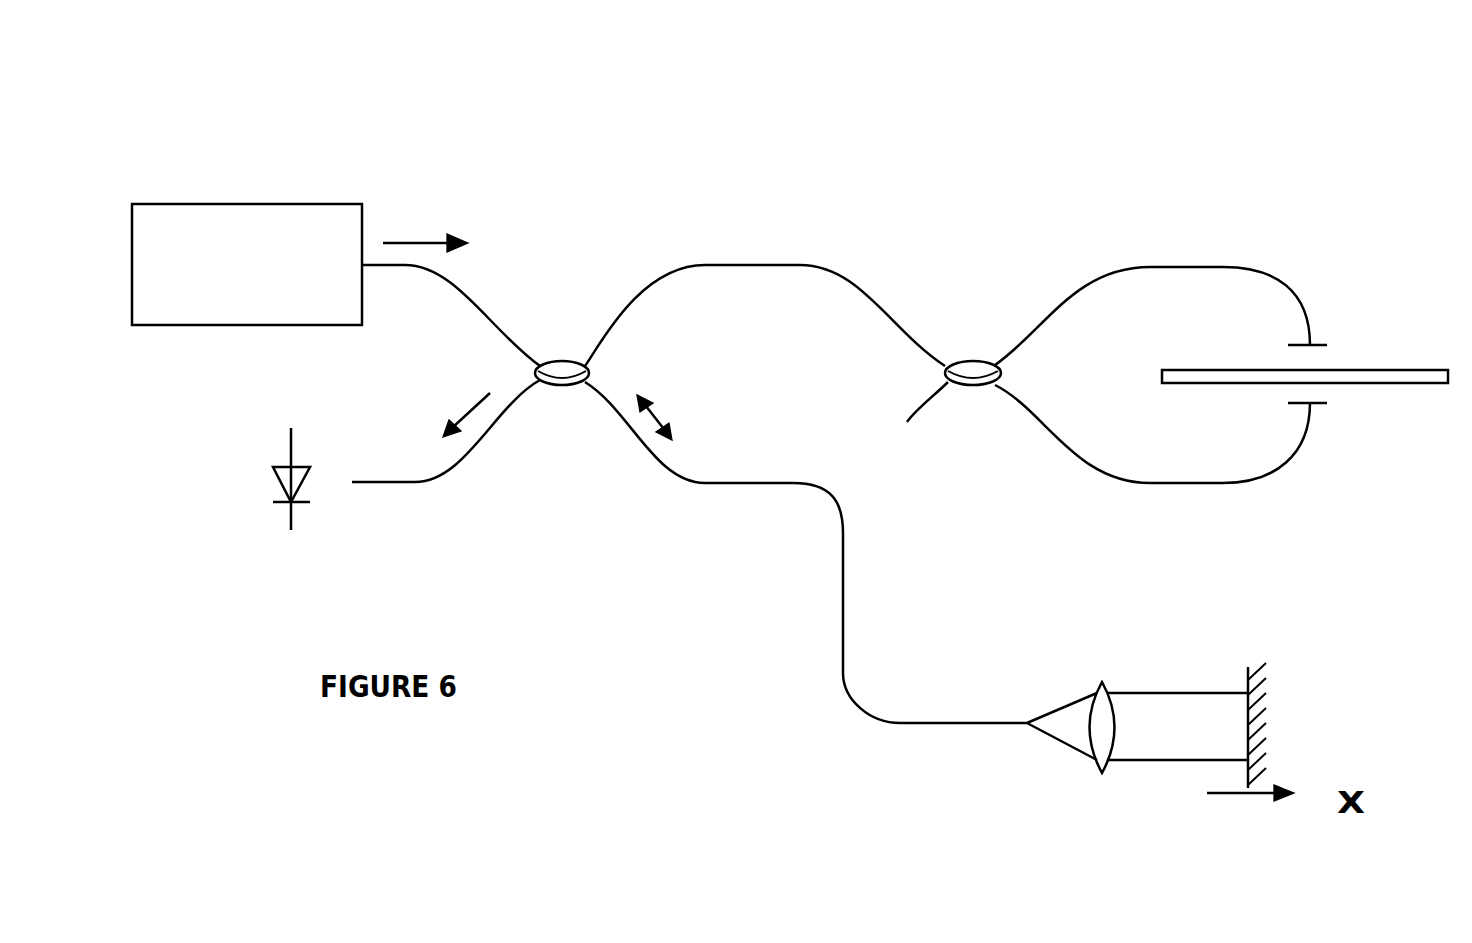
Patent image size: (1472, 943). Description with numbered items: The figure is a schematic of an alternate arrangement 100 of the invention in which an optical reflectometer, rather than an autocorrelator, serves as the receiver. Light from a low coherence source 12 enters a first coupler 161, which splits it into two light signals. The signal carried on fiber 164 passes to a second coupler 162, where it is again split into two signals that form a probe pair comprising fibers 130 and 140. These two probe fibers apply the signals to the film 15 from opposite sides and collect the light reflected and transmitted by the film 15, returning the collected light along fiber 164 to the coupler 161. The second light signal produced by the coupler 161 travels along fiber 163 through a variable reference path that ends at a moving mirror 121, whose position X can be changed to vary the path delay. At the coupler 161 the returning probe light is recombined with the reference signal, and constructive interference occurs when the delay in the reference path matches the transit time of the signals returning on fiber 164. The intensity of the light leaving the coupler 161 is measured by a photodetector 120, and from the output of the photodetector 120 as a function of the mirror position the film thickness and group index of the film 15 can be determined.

The alternate arrangement 100 is at (250, 122).
The low coherence source 12 is at (330, 325).
The first coupler 161 is at (562, 366).
The second fiber optic coupler 162 is at (975, 384).
The fiber 164 is at (780, 262).
The optical fiber to reference mirror 163 is at (697, 483).
The probe pair fiber 130 is at (1213, 265).
The probe pair fiber 140 is at (1275, 467).
The film 15 is at (1437, 371).
The photodetector 120 is at (280, 470).
The moving mirror 121 is at (1248, 682).